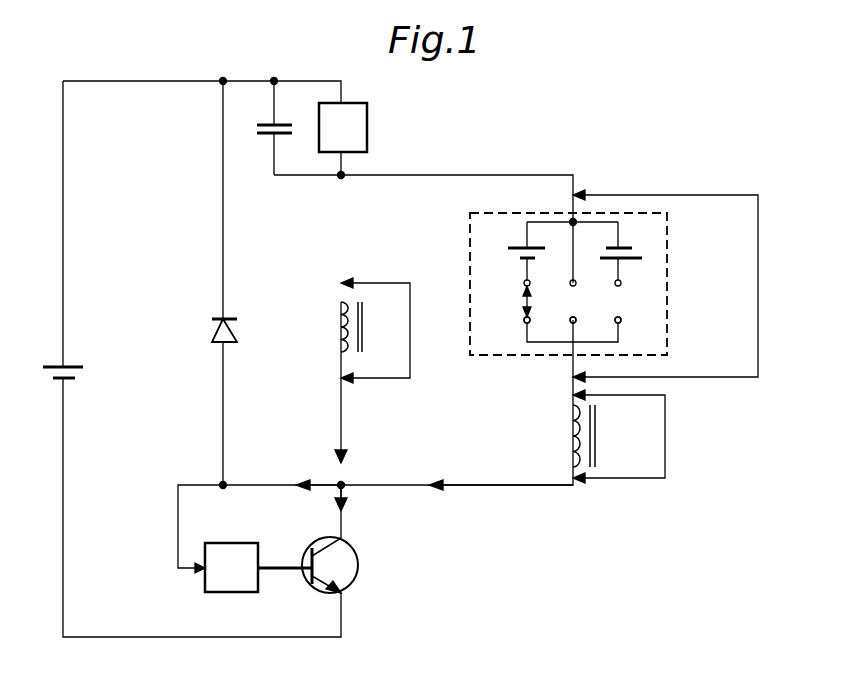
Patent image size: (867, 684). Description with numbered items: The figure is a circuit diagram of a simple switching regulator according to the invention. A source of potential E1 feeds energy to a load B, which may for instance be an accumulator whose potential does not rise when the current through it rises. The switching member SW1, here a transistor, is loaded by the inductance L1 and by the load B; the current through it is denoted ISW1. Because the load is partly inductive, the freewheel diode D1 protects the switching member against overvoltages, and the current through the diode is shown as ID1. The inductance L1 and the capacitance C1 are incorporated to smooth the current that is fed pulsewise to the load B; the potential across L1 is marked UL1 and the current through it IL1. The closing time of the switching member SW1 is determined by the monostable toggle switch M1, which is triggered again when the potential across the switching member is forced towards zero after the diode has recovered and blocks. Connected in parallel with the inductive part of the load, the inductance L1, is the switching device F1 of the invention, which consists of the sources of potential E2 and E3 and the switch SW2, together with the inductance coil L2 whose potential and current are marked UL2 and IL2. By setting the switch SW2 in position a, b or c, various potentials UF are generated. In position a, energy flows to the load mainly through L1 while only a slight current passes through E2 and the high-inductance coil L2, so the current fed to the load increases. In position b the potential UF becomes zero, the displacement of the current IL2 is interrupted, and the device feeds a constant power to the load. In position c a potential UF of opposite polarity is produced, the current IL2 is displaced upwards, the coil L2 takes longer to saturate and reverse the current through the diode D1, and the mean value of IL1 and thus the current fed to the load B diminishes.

The source of potential E1 is at (70, 360).
The freewheel diode D1 is at (212, 283).
The capacitance C1 is at (267, 128).
The load B is at (343, 127).
The inductance L1 is at (333, 327).
The potential across inductance L1 UL1 is at (386, 330).
The current through inductance L1 IL1 is at (358, 407).
The current through diode D1 ID1 is at (303, 468).
The current through inductance coil L2 IL2 is at (493, 468).
The current through switching member SW1 ISW1 is at (371, 509).
The monostable toggle switch M1 is at (231, 567).
The switching member SW1 is at (329, 578).
The switching device F1 is at (586, 284).
The source of potential E2 is at (534, 255).
The source of potential E3 is at (626, 255).
The switch SW2 is at (547, 311).
The switch position a is at (533, 330).
The switch position b is at (579, 330).
The switch position c is at (623, 330).
The potential UF is at (671, 286).
The inductance coil L2 is at (566, 436).
The potential across inductance coil L2 UL2 is at (629, 436).